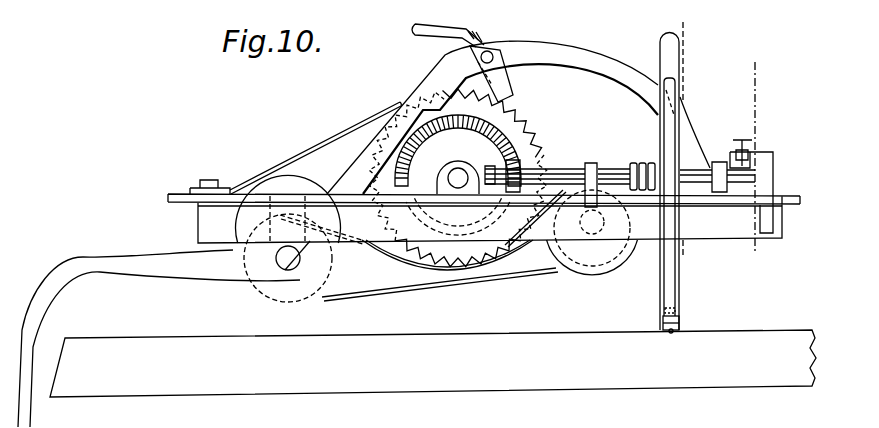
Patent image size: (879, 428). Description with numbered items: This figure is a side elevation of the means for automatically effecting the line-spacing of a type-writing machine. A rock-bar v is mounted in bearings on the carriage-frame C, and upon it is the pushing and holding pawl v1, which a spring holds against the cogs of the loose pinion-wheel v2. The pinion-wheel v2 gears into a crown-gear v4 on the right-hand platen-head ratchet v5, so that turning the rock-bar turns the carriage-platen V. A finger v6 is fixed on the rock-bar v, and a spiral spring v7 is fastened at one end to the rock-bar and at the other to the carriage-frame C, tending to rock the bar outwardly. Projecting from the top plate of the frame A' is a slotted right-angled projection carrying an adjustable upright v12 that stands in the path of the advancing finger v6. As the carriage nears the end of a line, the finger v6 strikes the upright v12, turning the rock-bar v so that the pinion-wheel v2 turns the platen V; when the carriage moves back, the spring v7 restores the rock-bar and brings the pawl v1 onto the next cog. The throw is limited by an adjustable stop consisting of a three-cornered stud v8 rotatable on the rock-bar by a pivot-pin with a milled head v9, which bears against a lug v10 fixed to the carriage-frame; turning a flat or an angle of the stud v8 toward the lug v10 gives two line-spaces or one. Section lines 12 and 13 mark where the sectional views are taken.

The carriage-frame C is at (210, 221).
The carriage-platen V is at (517, 137).
The crown-gear v4 is at (489, 138).
The right-hand platen-head ratchet v5 is at (510, 101).
The loose pinion-wheel v2 is at (521, 168).
The pushing and holding pawl v1 is at (507, 161).
The rock-bar v is at (607, 167).
The spiral spring v7 is at (648, 155).
The finger v6 is at (668, 51).
The adjustable upright v12 is at (667, 115).
The three-cornered stud v8 is at (727, 160).
The milled head v9 is at (748, 136).
The lug or projection v10 is at (750, 156).
The section line 12 12 is at (718, 24).
The section line 13 13 is at (785, 80).
The top plate of the frame A' is at (433, 363).